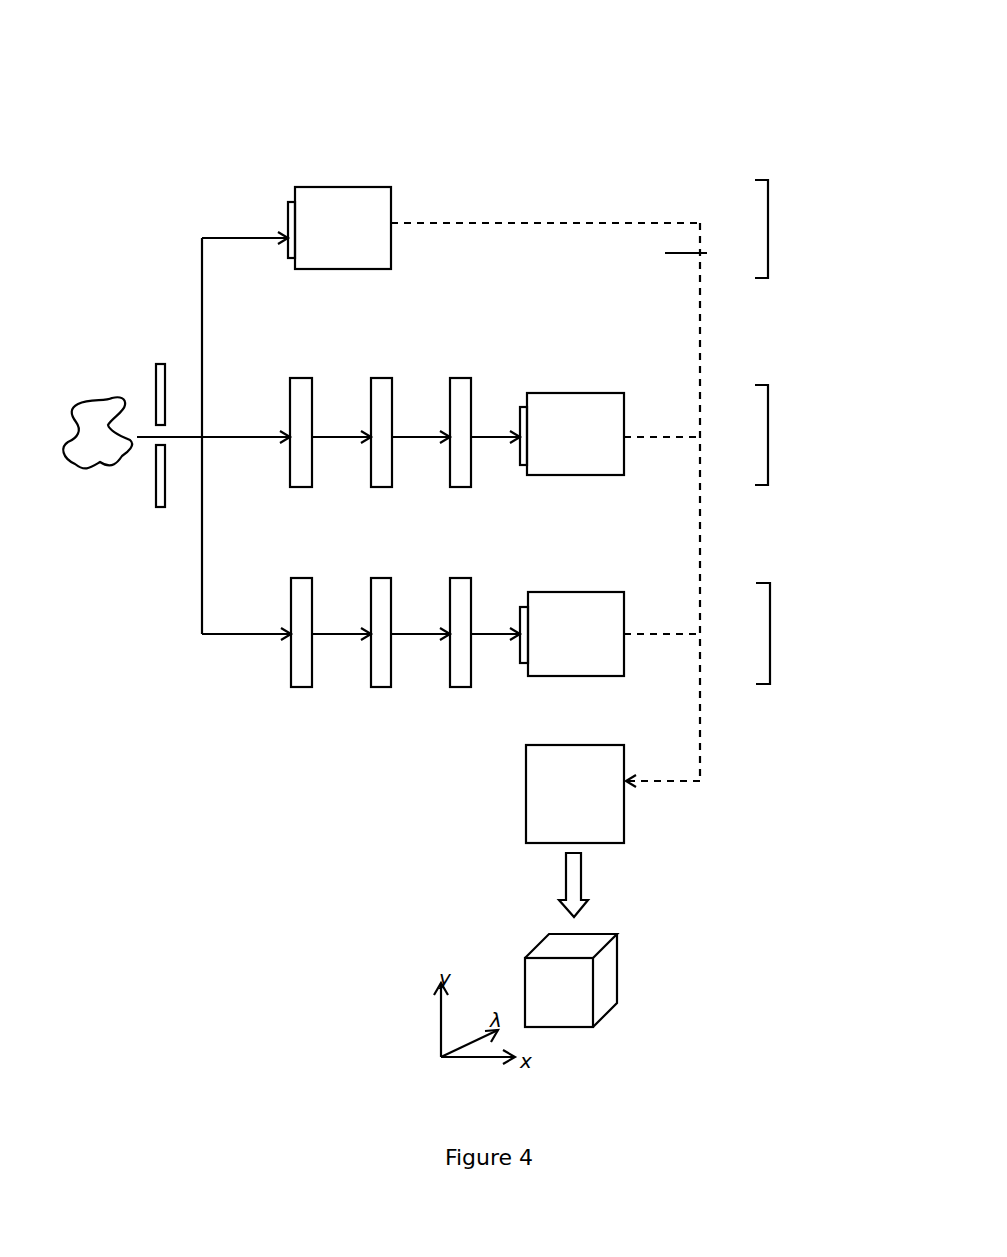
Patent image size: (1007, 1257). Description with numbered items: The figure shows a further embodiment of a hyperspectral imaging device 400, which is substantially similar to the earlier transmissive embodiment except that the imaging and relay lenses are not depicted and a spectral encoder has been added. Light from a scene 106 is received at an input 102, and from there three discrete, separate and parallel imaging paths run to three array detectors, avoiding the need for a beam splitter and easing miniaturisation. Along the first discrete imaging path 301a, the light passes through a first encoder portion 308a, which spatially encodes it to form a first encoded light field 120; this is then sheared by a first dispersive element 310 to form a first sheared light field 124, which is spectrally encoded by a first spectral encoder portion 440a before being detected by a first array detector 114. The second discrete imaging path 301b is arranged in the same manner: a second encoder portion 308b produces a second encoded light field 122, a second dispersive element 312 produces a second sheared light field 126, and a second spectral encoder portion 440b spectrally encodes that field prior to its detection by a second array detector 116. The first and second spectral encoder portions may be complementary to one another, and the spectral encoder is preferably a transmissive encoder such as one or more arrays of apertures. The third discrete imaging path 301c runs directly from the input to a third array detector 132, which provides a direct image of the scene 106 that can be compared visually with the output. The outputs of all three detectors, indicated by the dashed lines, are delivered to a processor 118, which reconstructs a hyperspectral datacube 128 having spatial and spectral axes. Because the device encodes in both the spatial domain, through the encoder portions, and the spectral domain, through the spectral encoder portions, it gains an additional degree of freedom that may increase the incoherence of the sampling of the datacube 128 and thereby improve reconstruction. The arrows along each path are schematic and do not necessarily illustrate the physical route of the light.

The hyperspectral imaging device 400 is at (567, 163).
The scene 106 is at (95, 398).
The input 102 is at (158, 364).
The first encoder portion 308a is at (302, 378).
The first dispersive element 310 is at (385, 378).
The first spectral encoder portion 440a is at (466, 378).
The first array detector 114 is at (557, 448).
The first encoded light field 120 is at (330, 437).
The first sheared light field 124 is at (413, 437).
The second encoder portion 308b is at (303, 687).
The second dispersive element 312 is at (385, 687).
The second spectral encoder portion 440b is at (462, 687).
The second array detector 116 is at (557, 646).
The second encoded light field 122 is at (337, 634).
The second sheared light field 126 is at (420, 634).
The third array detector 132 is at (325, 238).
The first discrete imaging path 301a is at (798, 229).
The second discrete imaging path 301b is at (798, 435).
The third discrete imaging path 301c is at (798, 633).
The processor 118 is at (557, 808).
The hyperspectral datacube 128 is at (560, 1027).